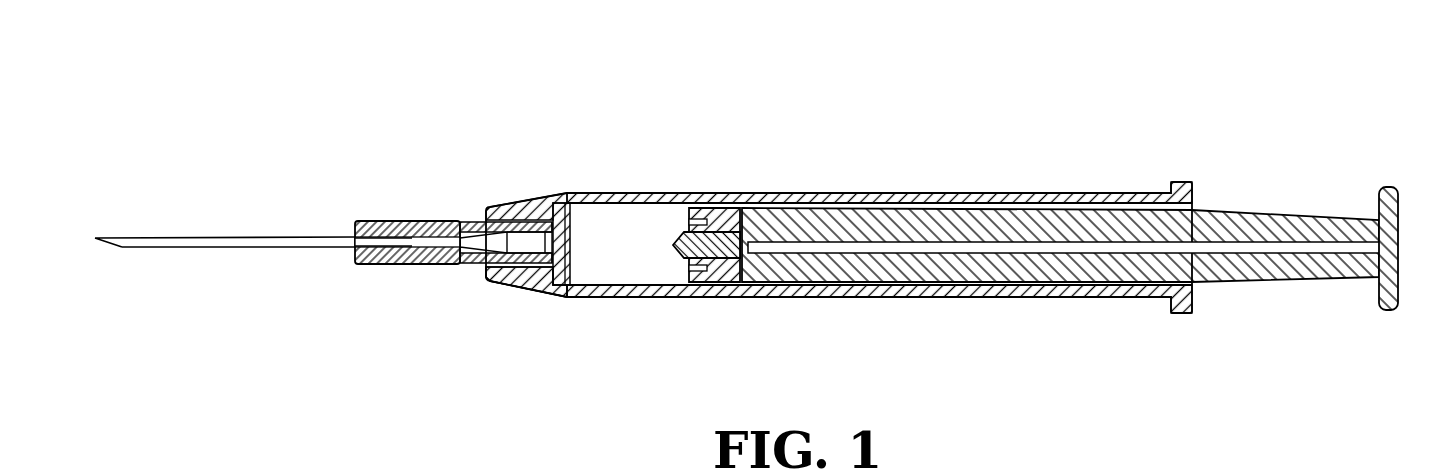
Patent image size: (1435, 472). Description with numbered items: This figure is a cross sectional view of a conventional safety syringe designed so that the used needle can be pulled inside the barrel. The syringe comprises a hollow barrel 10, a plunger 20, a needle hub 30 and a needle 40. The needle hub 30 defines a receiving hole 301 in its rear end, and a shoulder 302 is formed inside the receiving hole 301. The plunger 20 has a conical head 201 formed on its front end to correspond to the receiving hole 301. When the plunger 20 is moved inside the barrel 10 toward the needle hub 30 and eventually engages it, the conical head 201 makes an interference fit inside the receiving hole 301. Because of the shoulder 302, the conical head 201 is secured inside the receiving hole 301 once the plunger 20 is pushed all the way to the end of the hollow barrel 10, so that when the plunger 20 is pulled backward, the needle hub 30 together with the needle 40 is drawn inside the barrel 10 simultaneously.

The hollow barrel 10 is at (933, 193).
The plunger 20 is at (965, 272).
The conical head 201 is at (672, 232).
The needle hub 30 is at (497, 283).
The receiving hole 301 is at (553, 293).
The shoulder 302 is at (572, 238).
The needle 40 is at (233, 237).